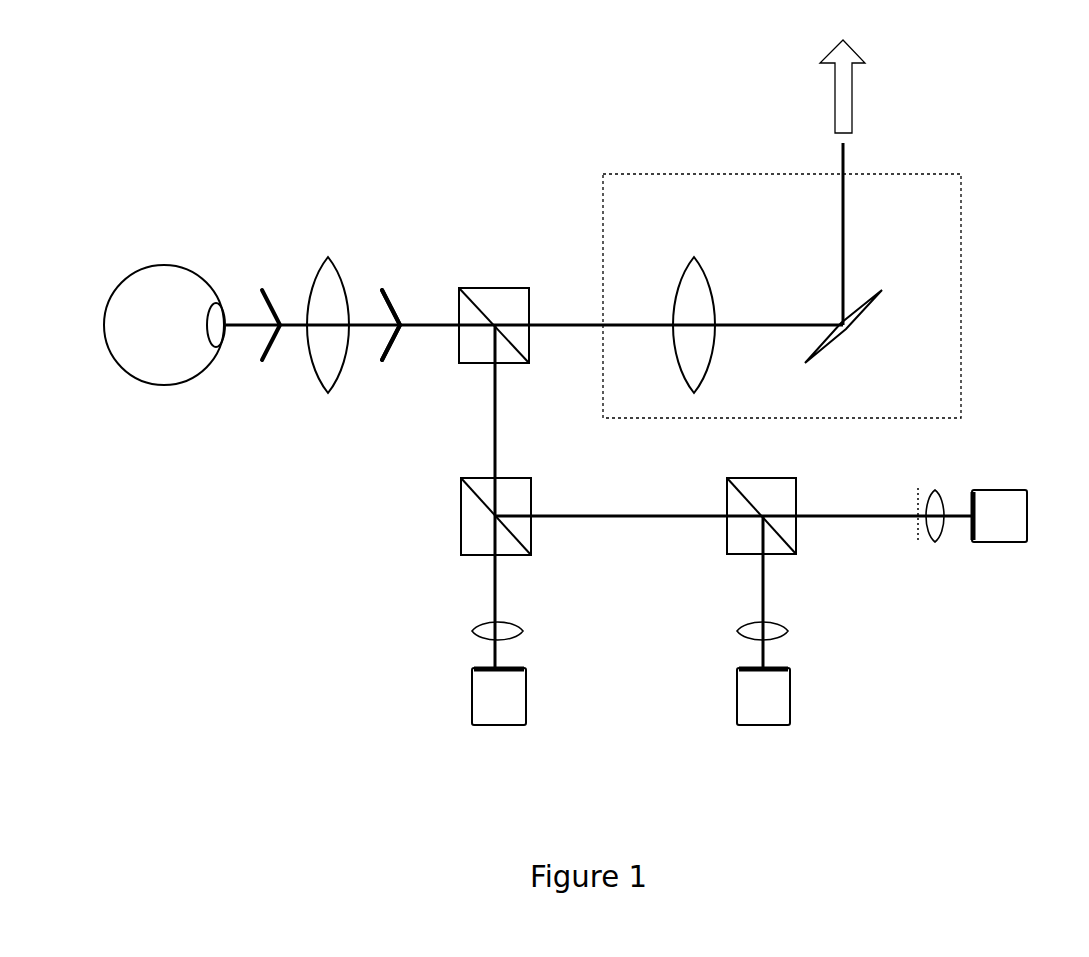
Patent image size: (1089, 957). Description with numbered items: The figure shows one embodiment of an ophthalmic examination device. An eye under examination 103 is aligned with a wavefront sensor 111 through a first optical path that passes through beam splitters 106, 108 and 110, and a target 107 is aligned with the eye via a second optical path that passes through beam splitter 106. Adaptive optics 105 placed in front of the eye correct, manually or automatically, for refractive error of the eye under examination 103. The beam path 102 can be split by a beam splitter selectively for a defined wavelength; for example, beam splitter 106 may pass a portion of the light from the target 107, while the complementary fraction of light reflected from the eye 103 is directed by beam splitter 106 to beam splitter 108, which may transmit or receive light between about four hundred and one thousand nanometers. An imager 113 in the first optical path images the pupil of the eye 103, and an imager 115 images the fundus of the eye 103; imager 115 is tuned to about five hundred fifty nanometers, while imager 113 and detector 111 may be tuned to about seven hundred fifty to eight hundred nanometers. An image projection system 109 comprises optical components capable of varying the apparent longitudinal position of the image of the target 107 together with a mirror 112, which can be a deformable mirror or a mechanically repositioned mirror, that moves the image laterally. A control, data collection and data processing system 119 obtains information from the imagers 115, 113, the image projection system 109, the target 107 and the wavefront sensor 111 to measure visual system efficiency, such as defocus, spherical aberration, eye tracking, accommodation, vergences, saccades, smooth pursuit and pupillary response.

The beam path 102 is at (389, 298).
The eye under examination 103 is at (120, 282).
The adaptive optics 105 is at (318, 272).
The beam splitter 106 is at (502, 283).
The target 107 is at (832, 83).
The beam splitter 108 is at (458, 505).
The image projection system 109 is at (685, 270).
The beam splitter 110 is at (723, 505).
The wavefront sensor 111 is at (1027, 555).
The mirror 112 is at (870, 315).
The imager 113 is at (725, 623).
The imager 115 is at (460, 623).
The control, data collection and data processing system 119 is at (222, 588).